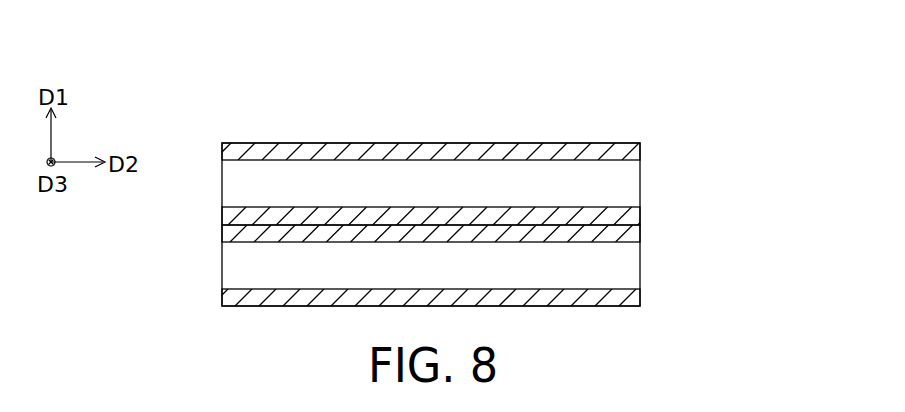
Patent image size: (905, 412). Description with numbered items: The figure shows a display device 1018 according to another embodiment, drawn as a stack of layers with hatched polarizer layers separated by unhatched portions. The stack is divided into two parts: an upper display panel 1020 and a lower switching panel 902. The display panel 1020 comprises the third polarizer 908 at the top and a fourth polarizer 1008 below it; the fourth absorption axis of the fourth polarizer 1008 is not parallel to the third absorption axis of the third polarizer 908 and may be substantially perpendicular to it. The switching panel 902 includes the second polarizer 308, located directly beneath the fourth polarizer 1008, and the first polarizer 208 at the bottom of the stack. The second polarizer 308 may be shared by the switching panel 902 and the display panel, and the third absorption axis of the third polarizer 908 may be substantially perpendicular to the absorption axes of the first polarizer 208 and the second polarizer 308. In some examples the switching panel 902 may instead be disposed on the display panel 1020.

The display device 1018 is at (234, 68).
The display panel 1020 is at (742, 128).
The switching panel 902 is at (732, 227).
The third polarizer 908 is at (640, 147).
The fourth polarizer 1008 is at (640, 217).
The second polarizer 308 is at (640, 233).
The first polarizer 208 is at (640, 295).